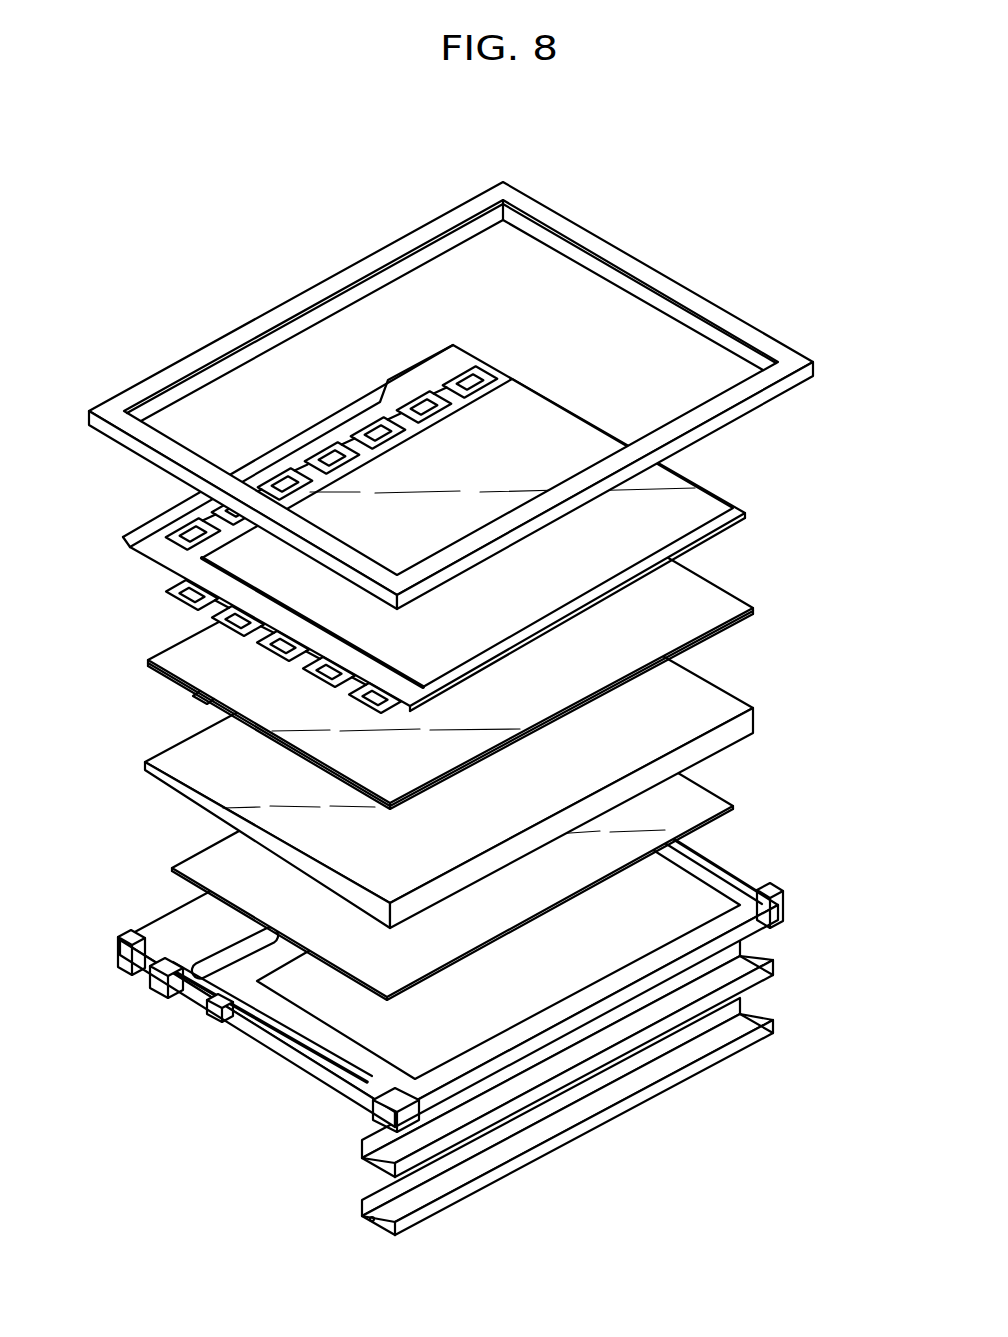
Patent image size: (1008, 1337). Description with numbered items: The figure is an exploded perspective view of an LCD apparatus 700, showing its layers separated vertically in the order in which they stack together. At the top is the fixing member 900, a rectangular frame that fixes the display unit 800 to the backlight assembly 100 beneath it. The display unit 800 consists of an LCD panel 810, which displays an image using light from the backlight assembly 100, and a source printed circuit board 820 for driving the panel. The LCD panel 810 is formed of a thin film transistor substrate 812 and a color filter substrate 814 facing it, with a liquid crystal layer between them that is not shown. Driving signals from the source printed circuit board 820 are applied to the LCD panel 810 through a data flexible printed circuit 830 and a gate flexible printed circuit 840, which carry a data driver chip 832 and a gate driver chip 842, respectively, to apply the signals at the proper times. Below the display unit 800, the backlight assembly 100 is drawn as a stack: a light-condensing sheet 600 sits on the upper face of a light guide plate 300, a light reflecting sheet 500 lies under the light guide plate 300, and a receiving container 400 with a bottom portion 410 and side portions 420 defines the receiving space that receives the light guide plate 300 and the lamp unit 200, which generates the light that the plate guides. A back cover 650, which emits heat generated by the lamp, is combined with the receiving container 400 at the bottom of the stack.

The backlight assembly 100 is at (504, 850).
The lamp unit 200 is at (770, 949).
The light guide plate 300 is at (739, 691).
The receiving container 400 is at (466, 936).
The bottom portion 410 is at (267, 1005).
The side portions 420 is at (357, 1100).
The light reflecting sheet 500 is at (720, 790).
The light-condensing sheet 600 is at (480, 637).
The back cover 650 is at (771, 999).
The LCD apparatus 700 is at (459, 158).
The display unit 800 is at (422, 533).
The LCD panel 810 is at (392, 528).
The thin film transistor substrate 812 is at (170, 578).
The color filter substrate 814 is at (193, 567).
The source printed circuit board 820 is at (180, 515).
The data flexible printed circuit 830 is at (283, 466).
The data driver chip 832 is at (185, 541).
The gate flexible printed circuit 840 is at (255, 651).
The gate driver chip 842 is at (230, 612).
The fixing member 900 is at (684, 267).